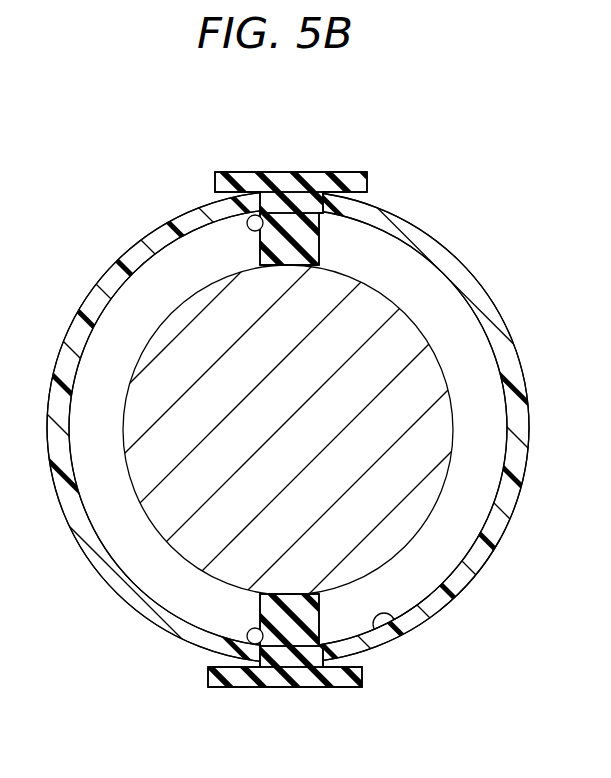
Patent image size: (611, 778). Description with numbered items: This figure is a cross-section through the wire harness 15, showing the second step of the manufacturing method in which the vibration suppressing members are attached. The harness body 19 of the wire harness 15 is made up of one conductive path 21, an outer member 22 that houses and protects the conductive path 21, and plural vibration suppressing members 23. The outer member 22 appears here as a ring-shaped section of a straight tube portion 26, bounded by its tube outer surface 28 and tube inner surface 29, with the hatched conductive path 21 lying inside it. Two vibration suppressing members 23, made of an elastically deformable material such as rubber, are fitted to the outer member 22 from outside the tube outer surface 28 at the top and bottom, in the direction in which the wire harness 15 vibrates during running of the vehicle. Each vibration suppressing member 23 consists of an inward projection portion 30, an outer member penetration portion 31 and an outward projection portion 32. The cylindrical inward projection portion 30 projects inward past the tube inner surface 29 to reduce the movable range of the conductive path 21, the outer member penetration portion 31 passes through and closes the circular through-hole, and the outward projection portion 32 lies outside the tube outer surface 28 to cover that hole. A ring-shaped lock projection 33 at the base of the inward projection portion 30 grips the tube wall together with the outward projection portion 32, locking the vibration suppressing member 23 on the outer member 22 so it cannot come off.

The wire harness 15 is at (506, 175).
The harness body 19 is at (523, 221).
The conductive path 21 is at (451, 375).
The outer member 22 is at (532, 437).
The vibration suppressing member 23 is at (347, 172).
The straight tube portion 26 is at (461, 580).
The tube outer surface 28 is at (417, 630).
The tube inner surface 29 is at (374, 631).
The inward projection portion 30 is at (282, 251).
The outer member penetration portion 31 is at (250, 206).
The outward projection portion 32 is at (246, 187).
The lock projection 33 is at (248, 226).